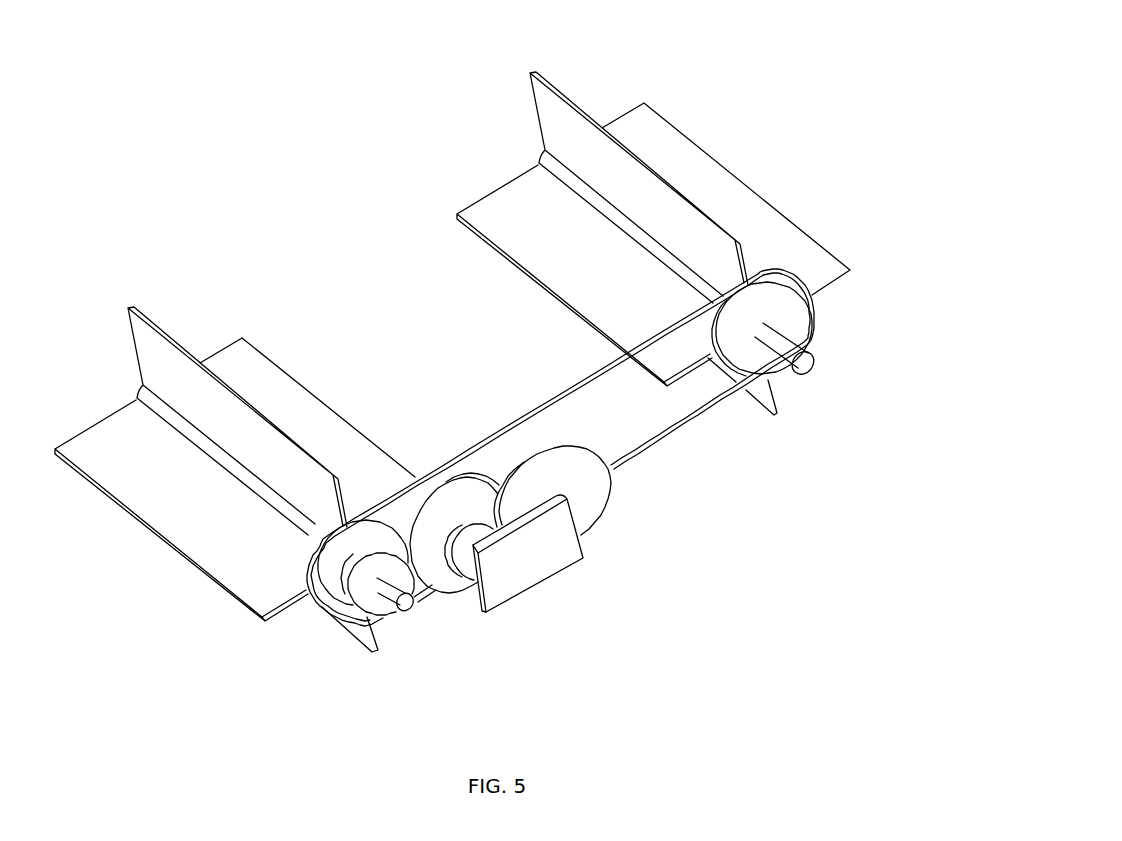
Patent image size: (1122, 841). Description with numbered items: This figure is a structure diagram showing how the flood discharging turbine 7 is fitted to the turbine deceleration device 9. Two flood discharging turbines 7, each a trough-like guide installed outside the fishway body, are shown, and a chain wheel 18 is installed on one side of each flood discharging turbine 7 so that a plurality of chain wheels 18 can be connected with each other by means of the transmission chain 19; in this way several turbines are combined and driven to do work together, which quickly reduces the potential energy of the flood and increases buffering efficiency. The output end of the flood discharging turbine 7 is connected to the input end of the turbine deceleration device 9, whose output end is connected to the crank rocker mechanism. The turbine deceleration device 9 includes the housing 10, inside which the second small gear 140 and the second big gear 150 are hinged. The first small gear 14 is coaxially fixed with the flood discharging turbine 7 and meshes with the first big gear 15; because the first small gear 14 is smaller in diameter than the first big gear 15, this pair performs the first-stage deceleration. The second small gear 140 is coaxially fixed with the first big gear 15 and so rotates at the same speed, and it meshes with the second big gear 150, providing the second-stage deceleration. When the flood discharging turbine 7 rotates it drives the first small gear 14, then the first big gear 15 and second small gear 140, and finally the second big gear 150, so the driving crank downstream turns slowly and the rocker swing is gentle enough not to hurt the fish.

The flood discharging turbine 7 is at (242, 338).
The turbine deceleration device 9 is at (567, 583).
The housing 10 is at (518, 597).
The first small gear 14 is at (382, 620).
The first big gear 15 is at (452, 580).
The chain wheel 18 is at (787, 323).
The transmission chain 19 is at (710, 413).
The second small gear 140 is at (468, 527).
The second big gear 150 is at (583, 498).